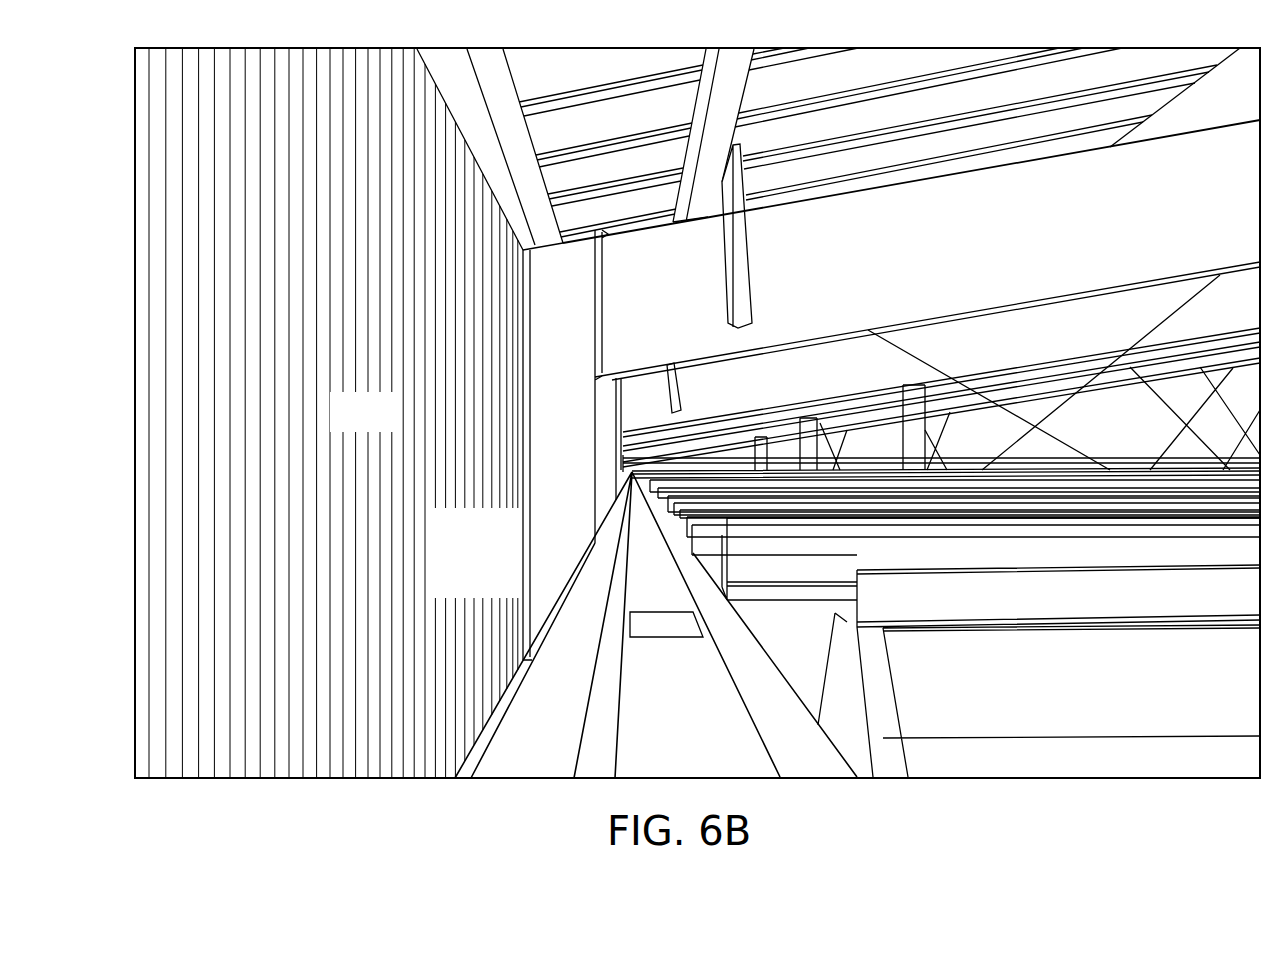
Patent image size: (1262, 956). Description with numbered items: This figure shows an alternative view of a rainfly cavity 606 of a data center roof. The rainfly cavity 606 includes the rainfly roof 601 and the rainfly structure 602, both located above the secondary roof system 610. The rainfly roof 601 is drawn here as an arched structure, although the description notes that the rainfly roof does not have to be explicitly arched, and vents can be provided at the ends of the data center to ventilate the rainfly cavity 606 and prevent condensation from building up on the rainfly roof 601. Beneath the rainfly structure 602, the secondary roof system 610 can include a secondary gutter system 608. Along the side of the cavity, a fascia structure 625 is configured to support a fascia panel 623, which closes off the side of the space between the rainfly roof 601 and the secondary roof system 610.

The rainfly roof 601 is at (920, 143).
The rainfly structure 602 is at (889, 288).
The rainfly cavity 606 is at (968, 798).
The secondary gutter system 608 is at (645, 620).
The secondary roof system 610 is at (1134, 702).
The fascia panel 623 is at (384, 427).
The fascia structure 625 is at (553, 483).